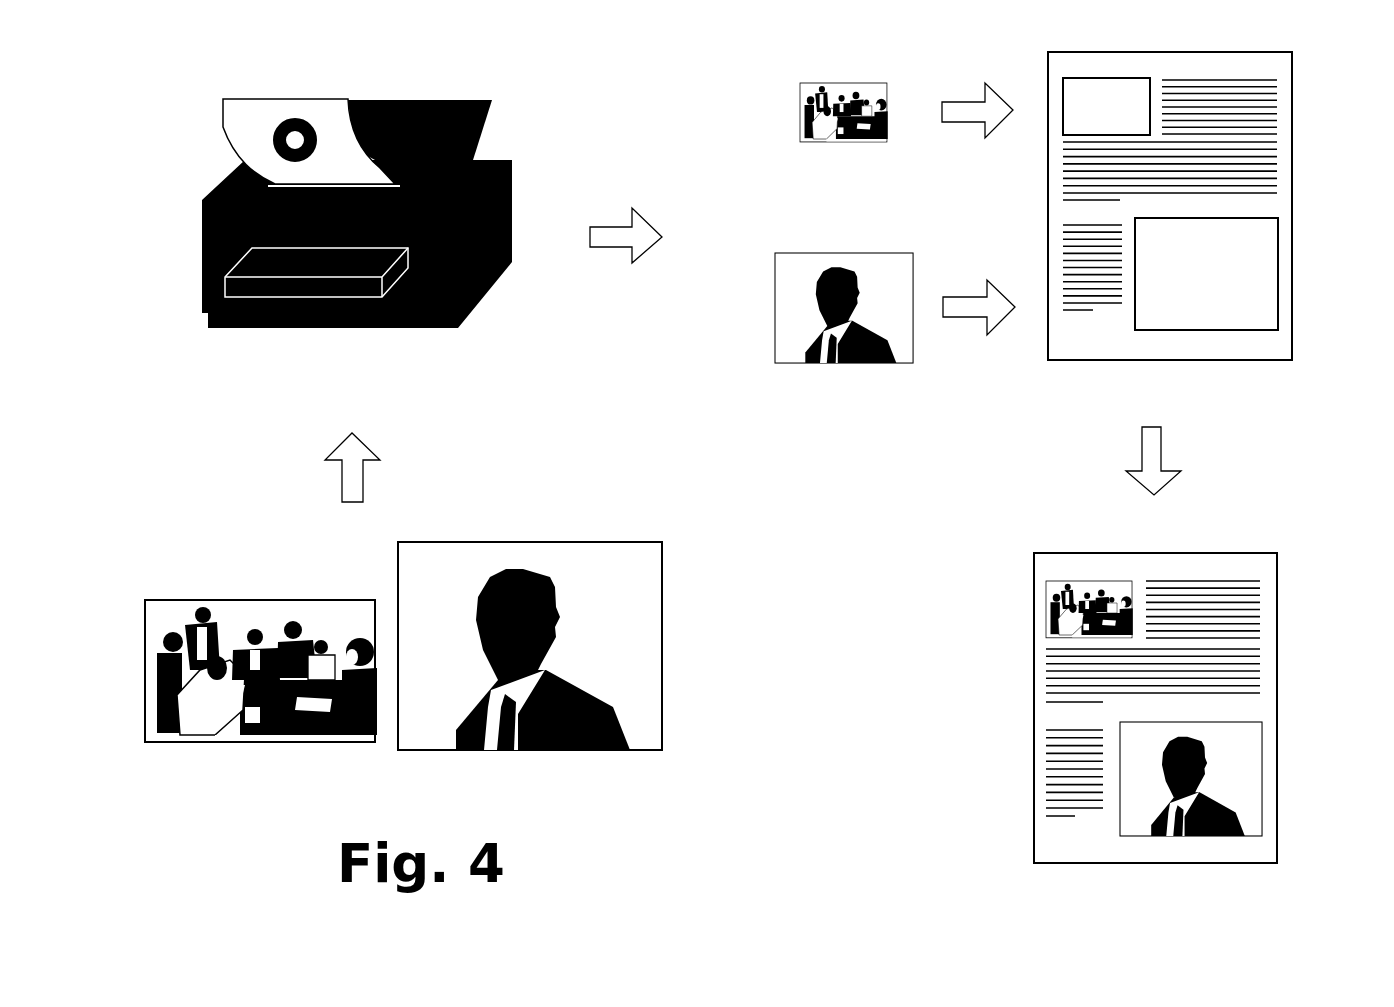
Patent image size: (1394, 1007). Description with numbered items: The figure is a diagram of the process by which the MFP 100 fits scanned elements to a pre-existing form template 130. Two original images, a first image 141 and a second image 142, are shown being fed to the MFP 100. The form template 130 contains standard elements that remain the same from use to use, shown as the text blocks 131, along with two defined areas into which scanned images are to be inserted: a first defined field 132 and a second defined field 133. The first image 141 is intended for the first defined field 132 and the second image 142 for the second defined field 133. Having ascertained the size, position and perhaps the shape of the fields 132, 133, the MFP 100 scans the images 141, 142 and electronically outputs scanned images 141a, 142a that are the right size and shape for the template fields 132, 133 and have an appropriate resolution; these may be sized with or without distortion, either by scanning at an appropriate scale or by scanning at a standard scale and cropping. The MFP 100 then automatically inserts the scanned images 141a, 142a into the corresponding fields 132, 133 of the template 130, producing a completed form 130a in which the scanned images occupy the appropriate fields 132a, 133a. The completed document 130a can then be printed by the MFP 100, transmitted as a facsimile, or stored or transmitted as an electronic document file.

The MFP 100 is at (432, 328).
The form template 130 is at (1181, 246).
The completed form 130a is at (1162, 734).
The text blocks 131 is at (1250, 127).
The first defined field 132 is at (1078, 108).
The first inserted scanned image field 132a is at (1050, 602).
The second defined field 133 is at (1263, 273).
The second inserted scanned image field 133a is at (1242, 767).
The first image 141 is at (260, 607).
The first scanned image 141a is at (793, 95).
The second image 142 is at (558, 557).
The second scanned image 142a is at (780, 275).